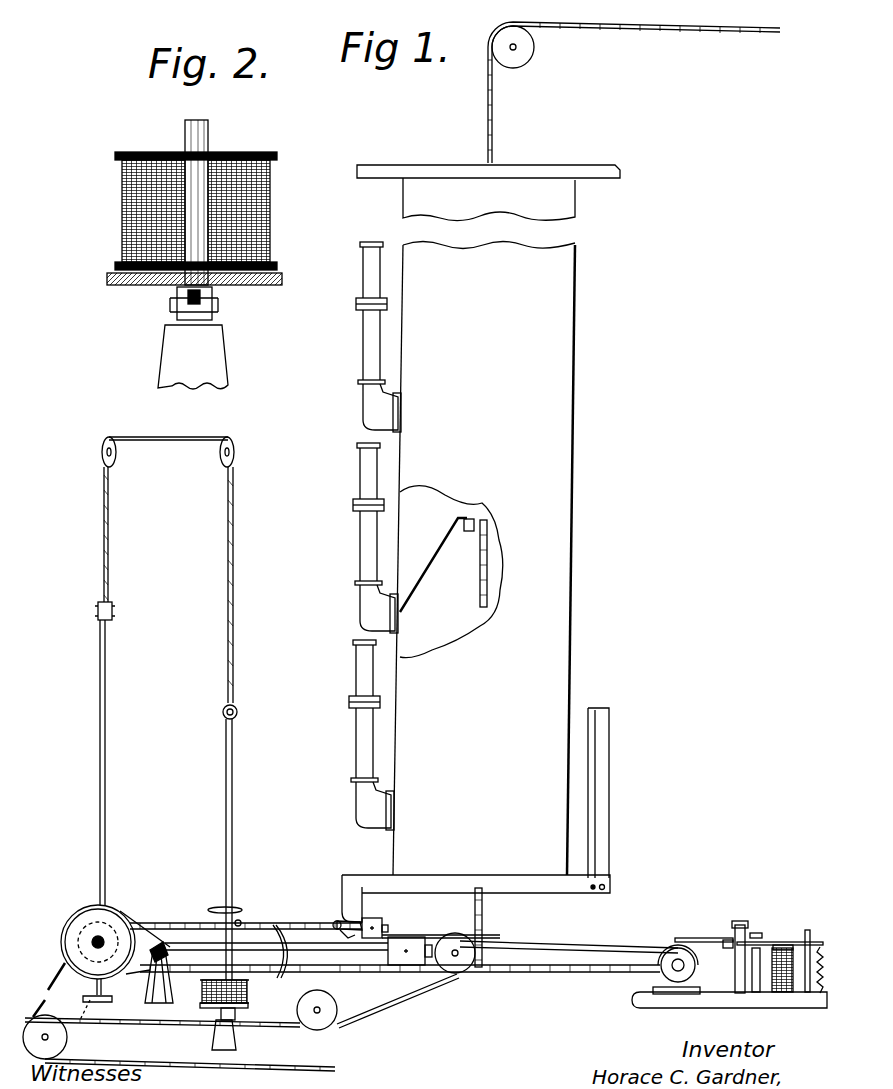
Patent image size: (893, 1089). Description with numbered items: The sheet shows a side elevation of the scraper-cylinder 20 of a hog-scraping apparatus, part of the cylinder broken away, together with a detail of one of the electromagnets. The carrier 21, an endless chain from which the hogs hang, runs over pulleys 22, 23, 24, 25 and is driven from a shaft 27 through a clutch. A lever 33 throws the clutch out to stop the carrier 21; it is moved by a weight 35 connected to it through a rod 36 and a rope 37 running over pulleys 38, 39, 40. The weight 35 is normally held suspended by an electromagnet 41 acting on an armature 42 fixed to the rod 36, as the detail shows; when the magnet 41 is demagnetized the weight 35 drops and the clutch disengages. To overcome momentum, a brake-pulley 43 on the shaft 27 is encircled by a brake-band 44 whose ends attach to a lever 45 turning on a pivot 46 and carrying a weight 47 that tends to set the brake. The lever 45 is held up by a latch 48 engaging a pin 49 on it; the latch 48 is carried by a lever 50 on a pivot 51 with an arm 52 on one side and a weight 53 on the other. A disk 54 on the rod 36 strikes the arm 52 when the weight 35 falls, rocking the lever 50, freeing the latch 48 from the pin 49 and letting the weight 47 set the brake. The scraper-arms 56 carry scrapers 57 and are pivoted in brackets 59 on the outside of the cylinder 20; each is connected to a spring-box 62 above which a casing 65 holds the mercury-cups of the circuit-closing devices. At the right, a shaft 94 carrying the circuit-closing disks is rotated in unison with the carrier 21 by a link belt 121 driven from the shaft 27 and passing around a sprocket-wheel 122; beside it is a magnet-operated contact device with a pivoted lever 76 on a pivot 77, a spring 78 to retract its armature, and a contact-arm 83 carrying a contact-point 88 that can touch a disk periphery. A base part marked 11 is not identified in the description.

In FIG. 1, the base plate 11 is at (782, 993).
In FIG. 1, the scraper-cylinder 20 is at (484, 559).
In FIG. 1, the carrier 21 is at (482, 910).
In FIG. 1, the pulley 22 is at (45, 1037).
In FIG. 1, the pulley 23 is at (317, 1010).
In FIG. 1, the pulley 24 is at (455, 955).
In FIG. 1, the pulley 25 is at (530, 54).
In FIG. 1, the shaft 27 is at (104, 951).
In FIG. 1, the lever 33 is at (105, 747).
In FIG. 2, the weight 35 is at (193, 338).
In FIG. 1, the weight 35 is at (224, 1029).
In FIG. 2, the rod 36 is at (210, 131).
In FIG. 1, the rod 36 is at (232, 823).
In FIG. 1, the rope 37 is at (234, 612).
In FIG. 1, the pulley 38 is at (224, 465).
In FIG. 1, the pulley 39 is at (116, 462).
In FIG. 1, the pulley 40 is at (112, 608).
In FIG. 2, the electromagnet 41 is at (270, 213).
In FIG. 1, the electromagnet 41 is at (247, 993).
In FIG. 2, the armature 42 is at (240, 286).
In FIG. 1, the armature 42 is at (245, 1008).
In FIG. 1, the brake-pulley 43 is at (108, 953).
In FIG. 1, the brake-band 44 is at (150, 933).
In FIG. 1, the lever 45 is at (276, 940).
In FIG. 1, the pivot 46 is at (163, 945).
In FIG. 1, the weight 47 is at (416, 942).
In FIG. 1, the latch 48 is at (283, 942).
In FIG. 1, the pin 49 is at (268, 951).
In FIG. 1, the lever 50 is at (272, 925).
In FIG. 1, the pivot 51 is at (335, 921).
In FIG. 1, the arm 52 is at (240, 921).
In FIG. 1, the weight 53 is at (377, 918).
In FIG. 1, the disk 54 is at (232, 907).
In FIG. 1, the scraper-arms 56 is at (440, 540).
In FIG. 1, the scrapers 57 is at (468, 532).
In FIG. 1, the brackets 59 is at (378, 607).
In FIG. 1, the spring-box 62 is at (355, 741).
In FIG. 1, the casing 65 is at (360, 668).
In FIG. 1, the pivoted lever 76 is at (780, 945).
In FIG. 1, the pivots 77 is at (808, 940).
In FIG. 1, the springs 78 is at (823, 975).
In FIG. 1, the contact-arm 83 is at (704, 933).
In FIG. 1, the contact-point 88 is at (680, 945).
In FIG. 1, the shaft 94 is at (668, 955).
In FIG. 1, the link belt 121 is at (569, 940).
In FIG. 1, the sprocket-wheel 122 is at (690, 972).